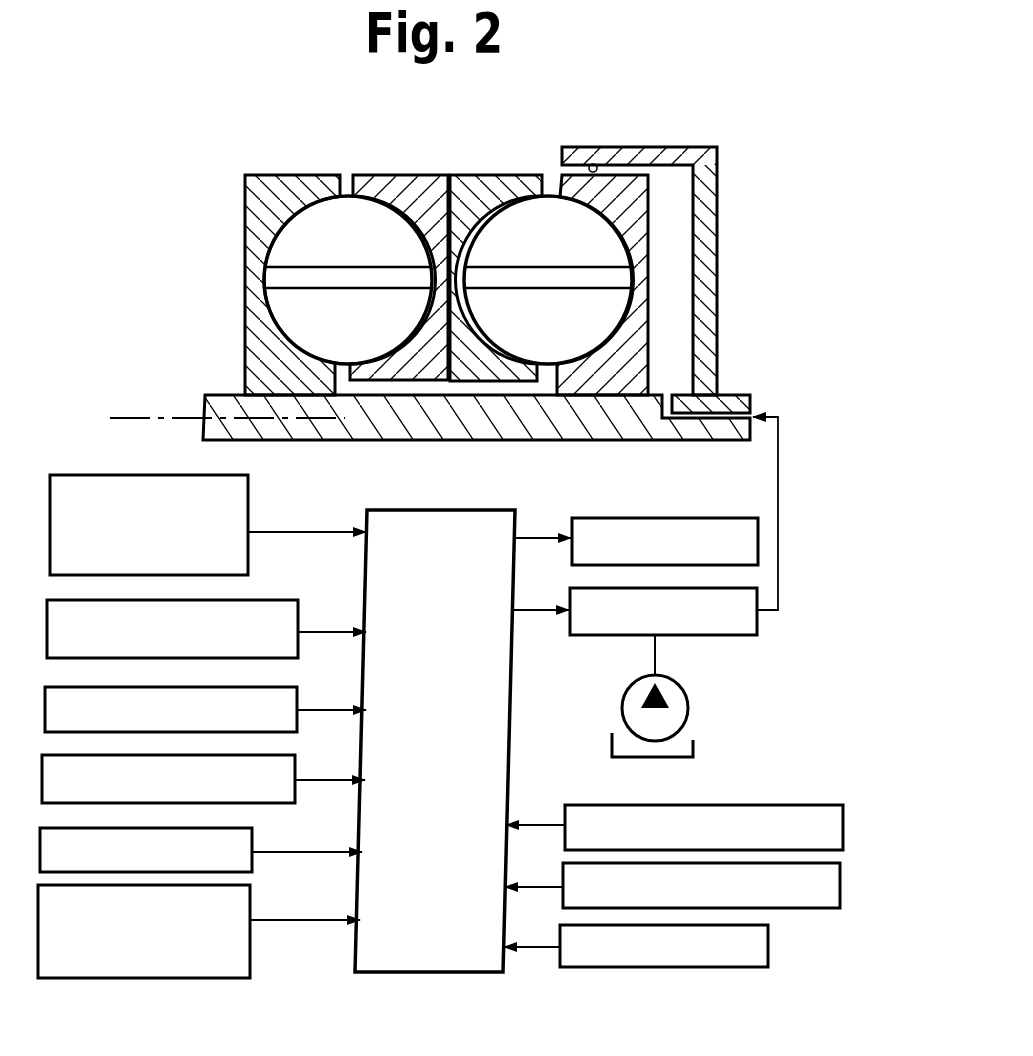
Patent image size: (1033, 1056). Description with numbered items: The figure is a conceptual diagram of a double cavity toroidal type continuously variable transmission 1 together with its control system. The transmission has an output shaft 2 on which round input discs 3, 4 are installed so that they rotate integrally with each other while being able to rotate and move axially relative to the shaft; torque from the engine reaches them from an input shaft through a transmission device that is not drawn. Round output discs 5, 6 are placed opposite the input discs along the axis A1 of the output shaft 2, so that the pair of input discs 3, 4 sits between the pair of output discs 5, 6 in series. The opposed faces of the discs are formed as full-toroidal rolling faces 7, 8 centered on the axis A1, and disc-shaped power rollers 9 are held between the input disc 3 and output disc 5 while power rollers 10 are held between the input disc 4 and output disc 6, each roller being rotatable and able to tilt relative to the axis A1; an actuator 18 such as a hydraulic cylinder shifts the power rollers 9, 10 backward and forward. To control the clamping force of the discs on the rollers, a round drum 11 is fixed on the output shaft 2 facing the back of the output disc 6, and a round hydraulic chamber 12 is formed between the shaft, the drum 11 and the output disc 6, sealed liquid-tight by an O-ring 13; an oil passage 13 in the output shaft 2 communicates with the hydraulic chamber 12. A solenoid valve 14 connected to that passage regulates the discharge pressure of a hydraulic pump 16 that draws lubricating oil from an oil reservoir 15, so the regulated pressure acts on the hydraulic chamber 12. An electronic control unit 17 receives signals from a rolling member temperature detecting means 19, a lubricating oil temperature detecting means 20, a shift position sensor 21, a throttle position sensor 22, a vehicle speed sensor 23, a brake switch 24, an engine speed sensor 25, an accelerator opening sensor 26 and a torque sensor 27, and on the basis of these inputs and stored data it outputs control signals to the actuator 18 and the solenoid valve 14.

The continuously variable transmission 1 is at (200, 282).
The output shaft 2 is at (208, 393).
The input disc 3 is at (390, 188).
The input disc 4 is at (485, 182).
The output disc 5 is at (288, 182).
The output disc 6 is at (568, 185).
The rolling face 7 is at (408, 333).
The rolling face 8 is at (283, 327).
The power roller 9 is at (345, 276).
The power roller 10 is at (550, 276).
The drum 11 is at (717, 262).
The hydraulic chamber 12 is at (665, 305).
The O-ring / oil passage 13 is at (593, 164).
The axis A1 is at (148, 416).
The solenoid valve 14 is at (697, 634).
The oil reservoir 15 is at (695, 743).
The hydraulic pump 16 is at (680, 703).
The electronic control unit 17 is at (420, 513).
The actuator 18 is at (612, 518).
The rolling member temperature detecting means 19 is at (39, 936).
The lubricating oil temperature detecting means 20 is at (52, 542).
The shift position sensor 21 is at (49, 641).
The throttle position sensor 22 is at (47, 716).
The vehicle speed sensor 23 is at (44, 781).
The brake switch 24 is at (40, 851).
The engine speed sensor 25 is at (844, 828).
The accelerator opening sensor 26 is at (841, 890).
The torque sensor 27 is at (769, 947).